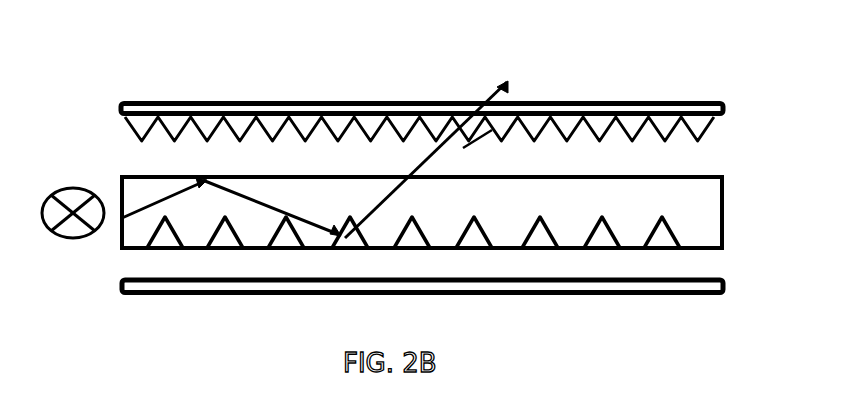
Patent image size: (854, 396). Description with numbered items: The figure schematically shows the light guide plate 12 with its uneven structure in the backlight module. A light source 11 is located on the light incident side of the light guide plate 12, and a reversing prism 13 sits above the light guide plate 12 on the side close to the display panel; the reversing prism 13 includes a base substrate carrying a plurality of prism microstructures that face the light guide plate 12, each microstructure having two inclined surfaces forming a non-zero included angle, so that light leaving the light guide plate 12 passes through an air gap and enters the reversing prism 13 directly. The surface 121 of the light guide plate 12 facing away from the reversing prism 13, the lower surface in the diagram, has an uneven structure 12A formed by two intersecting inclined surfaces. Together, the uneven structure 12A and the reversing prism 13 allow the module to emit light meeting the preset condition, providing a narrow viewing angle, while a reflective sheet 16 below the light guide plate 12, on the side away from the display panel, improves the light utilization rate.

The light source 11 is at (85, 264).
The light guide plate 12 is at (422, 258).
The uneven structure 12A is at (413, 276).
The surface 121 is at (732, 254).
The reversing prism 13 is at (422, 71).
The reflective sheet 16 is at (422, 309).